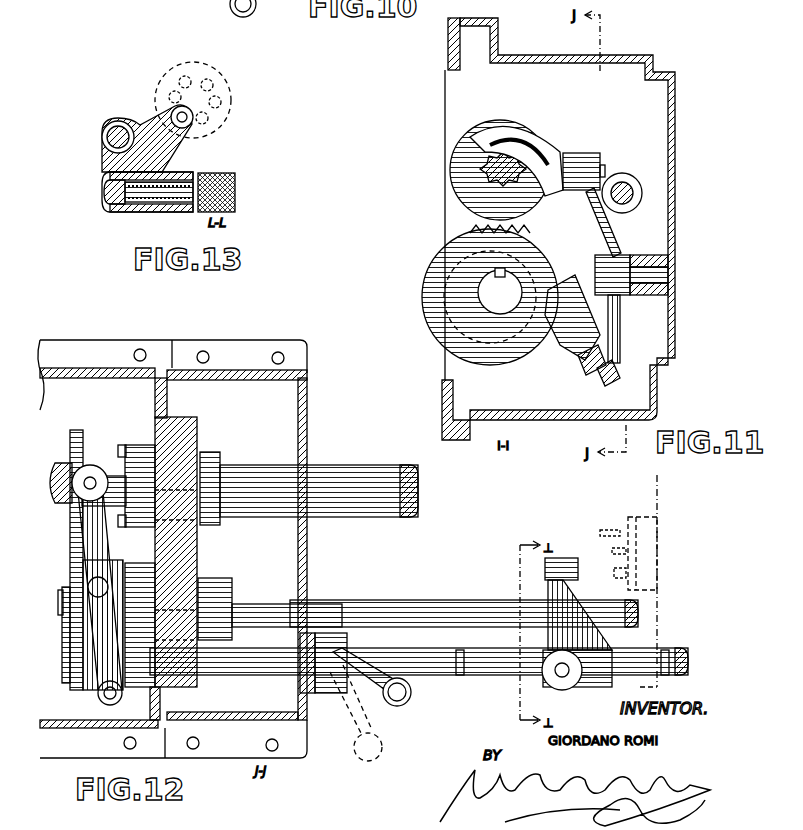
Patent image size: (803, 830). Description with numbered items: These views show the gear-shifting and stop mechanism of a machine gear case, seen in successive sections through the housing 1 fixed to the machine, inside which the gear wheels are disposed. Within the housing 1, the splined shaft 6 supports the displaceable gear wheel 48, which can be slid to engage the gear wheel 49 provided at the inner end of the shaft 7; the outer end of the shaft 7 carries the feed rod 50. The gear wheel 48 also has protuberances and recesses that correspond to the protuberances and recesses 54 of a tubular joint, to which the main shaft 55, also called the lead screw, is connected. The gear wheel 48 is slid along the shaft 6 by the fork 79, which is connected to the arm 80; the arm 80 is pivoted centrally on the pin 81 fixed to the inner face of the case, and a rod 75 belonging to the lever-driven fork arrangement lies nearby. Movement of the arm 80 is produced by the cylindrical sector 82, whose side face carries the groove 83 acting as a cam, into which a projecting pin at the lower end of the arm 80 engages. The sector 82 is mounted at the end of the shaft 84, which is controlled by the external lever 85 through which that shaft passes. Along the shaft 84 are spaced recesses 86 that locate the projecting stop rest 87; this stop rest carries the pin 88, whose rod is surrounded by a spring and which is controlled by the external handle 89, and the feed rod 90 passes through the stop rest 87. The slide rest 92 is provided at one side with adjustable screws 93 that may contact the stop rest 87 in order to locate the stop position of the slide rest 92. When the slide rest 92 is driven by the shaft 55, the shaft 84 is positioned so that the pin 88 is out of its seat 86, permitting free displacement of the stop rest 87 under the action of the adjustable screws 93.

In FIG. 11, the housing 1 is at (556, 56).
In FIG. 12, the housing 1 is at (300, 545).
In FIG. 11, the shaft 6 is at (490, 190).
In FIG. 12, the shaft 6 is at (58, 500).
In FIG. 11, the shaft 7 is at (480, 293).
In FIG. 12, the shaft 7 is at (60, 602).
In FIG. 11, the gear wheel 48 is at (482, 128).
In FIG. 12, the gear wheel 48 is at (70, 437).
In FIG. 11, the gear wheel 49 is at (440, 297).
In FIG. 12, the gear wheel 49 is at (63, 660).
In FIG. 12, the feed rod 50 is at (256, 605).
In FIG. 12, the protuberances and recesses 54 is at (124, 452).
In FIG. 12, the main shaft 55 is at (262, 468).
In FIG. 11, the rod 75 is at (622, 180).
In FIG. 11, the fork 79 is at (566, 155).
In FIG. 11, the arm 80 is at (592, 220).
In FIG. 12, the arm 80 is at (115, 555).
In FIG. 11, the pin 81 is at (660, 272).
In FIG. 11, the cylindrical sector 82 is at (572, 377).
In FIG. 12, the cylindrical sector 82 is at (104, 703).
In FIG. 11, the groove 83 is at (584, 296).
In FIG. 12, the groove 83 is at (80, 697).
In FIG. 13, the shaft 84 is at (108, 200).
In FIG. 12, the shaft 84 is at (258, 676).
In FIG. 12, the external lever 85 is at (367, 706).
In FIG. 12, the recesses 86 is at (464, 660).
In FIG. 13, the stop rest 87 is at (162, 122).
In FIG. 12, the stop rest 87 is at (548, 594).
In FIG. 13, the pin 88 is at (163, 213).
In FIG. 13, the external handle 89 is at (222, 172).
In FIG. 12, the external handle 89 is at (566, 690).
In FIG. 13, the feed rod 90 is at (108, 140).
In FIG. 12, the feed rod 90 is at (436, 602).
In FIG. 12, the slide rest 92 is at (657, 496).
In FIG. 13, the adjustable screws 93 is at (194, 75).
In FIG. 12, the adjustable screws 93 is at (614, 551).